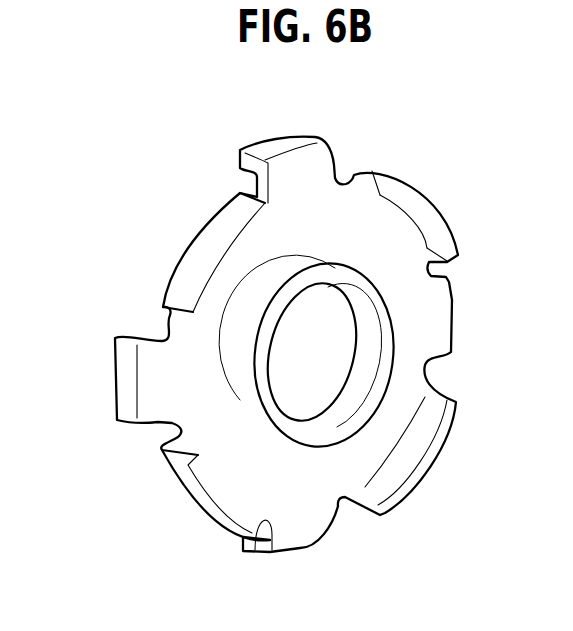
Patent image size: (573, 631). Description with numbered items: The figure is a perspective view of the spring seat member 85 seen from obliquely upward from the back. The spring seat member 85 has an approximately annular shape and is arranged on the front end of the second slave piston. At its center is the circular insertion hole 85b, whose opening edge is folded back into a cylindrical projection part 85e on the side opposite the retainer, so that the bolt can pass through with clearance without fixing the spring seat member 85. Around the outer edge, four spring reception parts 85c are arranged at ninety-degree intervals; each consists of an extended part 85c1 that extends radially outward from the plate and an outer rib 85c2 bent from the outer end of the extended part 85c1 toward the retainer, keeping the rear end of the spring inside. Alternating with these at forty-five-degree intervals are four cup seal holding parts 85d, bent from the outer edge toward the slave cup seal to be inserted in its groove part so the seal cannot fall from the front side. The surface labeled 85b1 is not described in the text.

The spring seat member 85 is at (120, 163).
The insertion hole 85b is at (355, 380).
The flat surface of boss 85b1 is at (342, 226).
The spring reception part 85c is at (312, 136).
The extended part 85c1 is at (250, 182).
The outer rib 85c2 is at (267, 152).
The cup seal holding part 85d is at (183, 258).
The projection part 85e is at (383, 330).